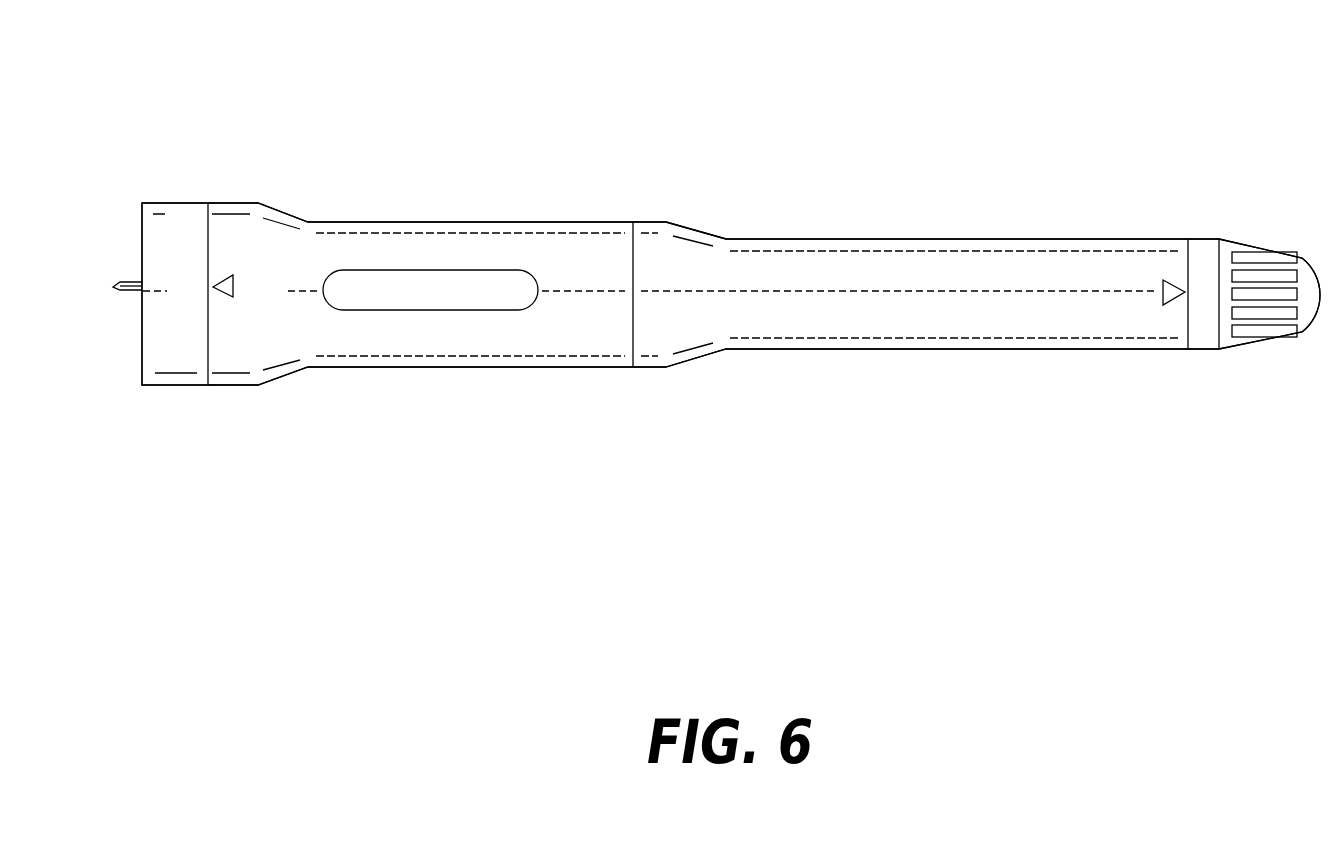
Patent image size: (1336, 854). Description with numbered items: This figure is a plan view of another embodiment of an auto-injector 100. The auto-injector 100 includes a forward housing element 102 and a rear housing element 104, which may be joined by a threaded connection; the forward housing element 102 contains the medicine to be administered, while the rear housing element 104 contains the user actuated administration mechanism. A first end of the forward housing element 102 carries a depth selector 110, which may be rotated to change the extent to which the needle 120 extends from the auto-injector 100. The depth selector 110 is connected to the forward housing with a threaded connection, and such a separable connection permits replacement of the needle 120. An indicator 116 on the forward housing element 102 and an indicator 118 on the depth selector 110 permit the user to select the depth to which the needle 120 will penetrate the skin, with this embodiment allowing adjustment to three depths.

The auto-injector 100 is at (883, 108).
The forward housing element 102 is at (492, 222).
The rear housing element 104 is at (943, 240).
The depth selector 110 is at (182, 203).
The indicator 116 is at (233, 283).
The indicator 118 is at (187, 292).
The needle 120 is at (112, 292).